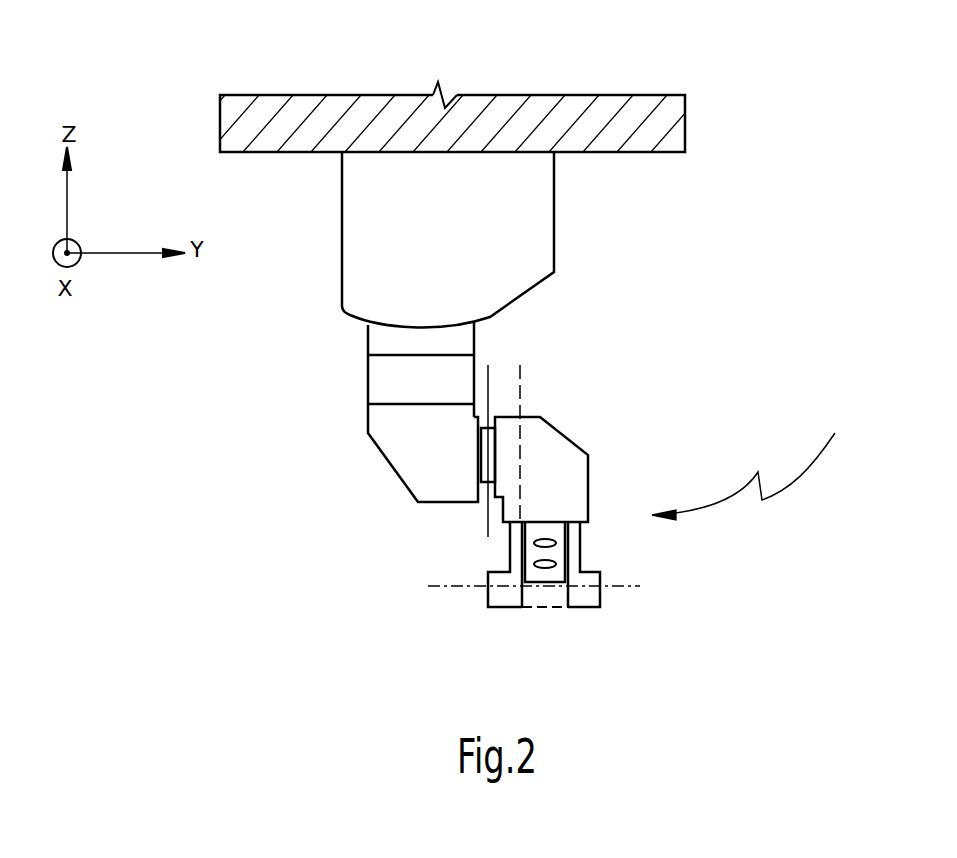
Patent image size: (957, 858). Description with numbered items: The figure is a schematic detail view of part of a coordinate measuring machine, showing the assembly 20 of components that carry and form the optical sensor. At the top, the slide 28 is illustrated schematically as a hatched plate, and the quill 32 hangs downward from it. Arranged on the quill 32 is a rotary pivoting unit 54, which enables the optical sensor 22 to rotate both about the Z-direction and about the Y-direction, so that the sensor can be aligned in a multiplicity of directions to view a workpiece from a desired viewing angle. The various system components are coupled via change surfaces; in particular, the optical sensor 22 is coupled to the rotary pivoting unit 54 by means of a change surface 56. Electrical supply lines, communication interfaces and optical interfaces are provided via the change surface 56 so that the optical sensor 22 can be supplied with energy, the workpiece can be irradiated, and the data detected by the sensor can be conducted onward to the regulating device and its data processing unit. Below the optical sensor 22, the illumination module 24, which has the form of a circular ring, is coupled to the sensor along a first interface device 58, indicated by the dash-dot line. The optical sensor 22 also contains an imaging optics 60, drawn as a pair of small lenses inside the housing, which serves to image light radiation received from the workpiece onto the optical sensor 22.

The clamping device assembly 20 is at (754, 463).
The optical sensor 22 is at (553, 457).
The illumination module 24 is at (587, 603).
The slide 28 is at (667, 125).
The quill 32 is at (527, 245).
The rotary pivoting unit 54 is at (420, 440).
The change surface 56 is at (483, 517).
The first interface device 58 is at (638, 585).
The imaging optics 60 is at (547, 538).